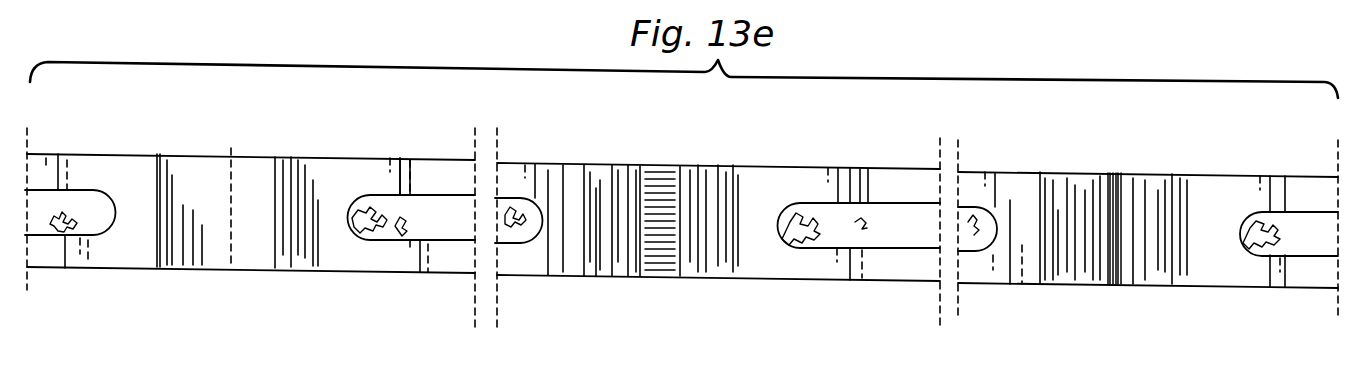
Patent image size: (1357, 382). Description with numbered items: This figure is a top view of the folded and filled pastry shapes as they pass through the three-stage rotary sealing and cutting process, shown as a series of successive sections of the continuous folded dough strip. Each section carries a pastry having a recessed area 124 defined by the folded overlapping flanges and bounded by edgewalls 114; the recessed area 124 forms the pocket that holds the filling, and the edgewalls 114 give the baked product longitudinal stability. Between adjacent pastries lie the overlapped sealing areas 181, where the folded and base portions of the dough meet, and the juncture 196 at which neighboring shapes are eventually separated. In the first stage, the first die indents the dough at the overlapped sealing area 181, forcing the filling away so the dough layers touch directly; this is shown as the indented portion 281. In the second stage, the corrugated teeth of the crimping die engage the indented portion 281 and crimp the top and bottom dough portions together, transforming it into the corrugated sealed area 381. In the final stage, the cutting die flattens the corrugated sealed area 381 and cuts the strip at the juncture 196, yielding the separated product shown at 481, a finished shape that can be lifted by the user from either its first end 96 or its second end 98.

The recessed area 124 is at (92, 190).
The juncture 196 is at (233, 156).
The overlapped sealing area 181 is at (300, 158).
The indented portion 281 is at (265, 266).
The edgewalls 114 is at (410, 170).
The corrugated sealed area 381 is at (660, 272).
The line pattern strip 481 is at (1085, 283).
The first end 96 is at (1168, 209).
The second end 98 is at (1120, 172).